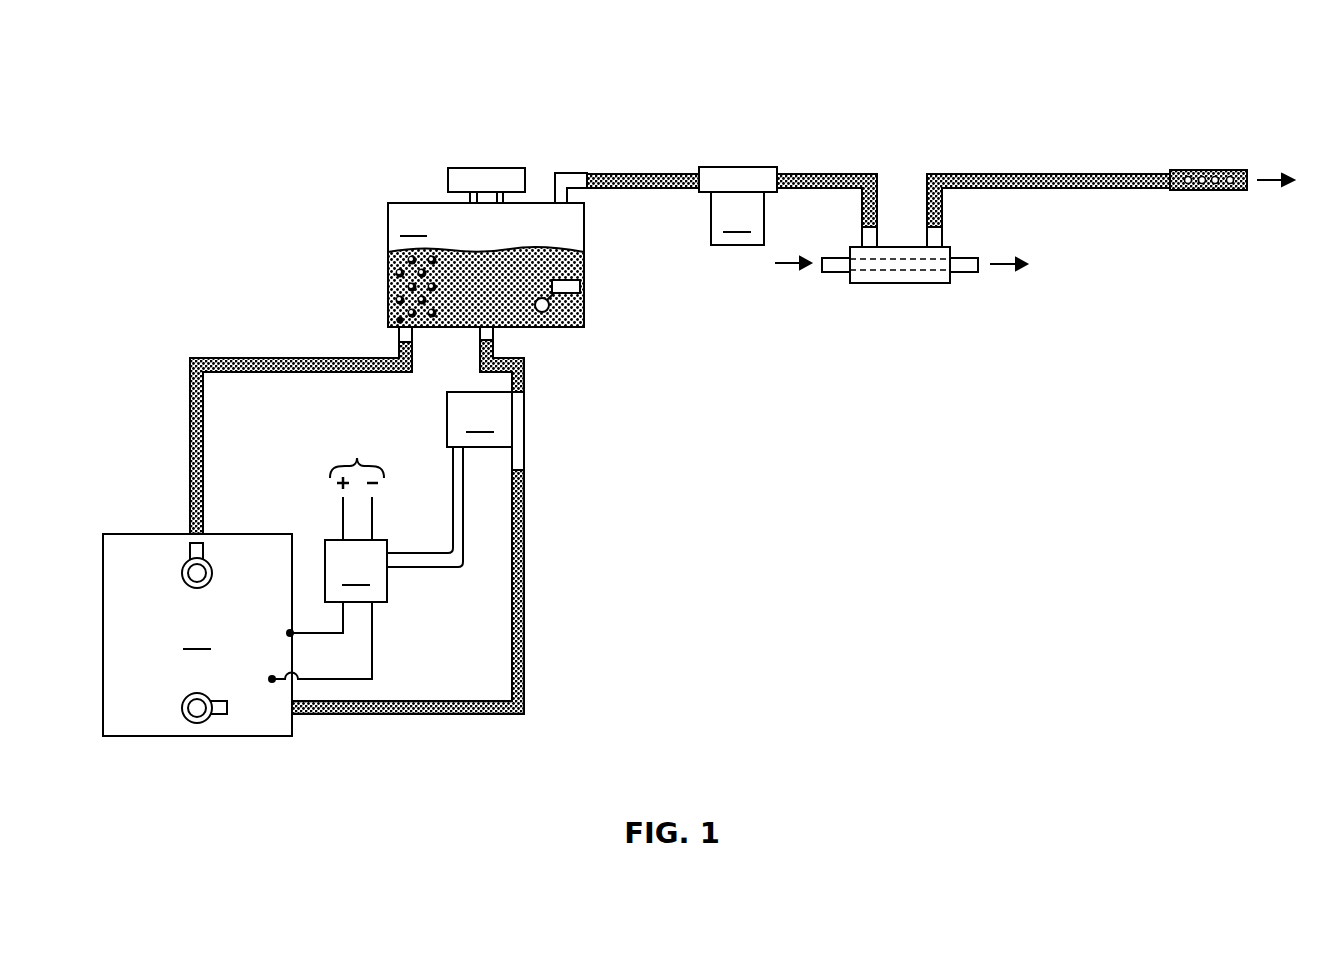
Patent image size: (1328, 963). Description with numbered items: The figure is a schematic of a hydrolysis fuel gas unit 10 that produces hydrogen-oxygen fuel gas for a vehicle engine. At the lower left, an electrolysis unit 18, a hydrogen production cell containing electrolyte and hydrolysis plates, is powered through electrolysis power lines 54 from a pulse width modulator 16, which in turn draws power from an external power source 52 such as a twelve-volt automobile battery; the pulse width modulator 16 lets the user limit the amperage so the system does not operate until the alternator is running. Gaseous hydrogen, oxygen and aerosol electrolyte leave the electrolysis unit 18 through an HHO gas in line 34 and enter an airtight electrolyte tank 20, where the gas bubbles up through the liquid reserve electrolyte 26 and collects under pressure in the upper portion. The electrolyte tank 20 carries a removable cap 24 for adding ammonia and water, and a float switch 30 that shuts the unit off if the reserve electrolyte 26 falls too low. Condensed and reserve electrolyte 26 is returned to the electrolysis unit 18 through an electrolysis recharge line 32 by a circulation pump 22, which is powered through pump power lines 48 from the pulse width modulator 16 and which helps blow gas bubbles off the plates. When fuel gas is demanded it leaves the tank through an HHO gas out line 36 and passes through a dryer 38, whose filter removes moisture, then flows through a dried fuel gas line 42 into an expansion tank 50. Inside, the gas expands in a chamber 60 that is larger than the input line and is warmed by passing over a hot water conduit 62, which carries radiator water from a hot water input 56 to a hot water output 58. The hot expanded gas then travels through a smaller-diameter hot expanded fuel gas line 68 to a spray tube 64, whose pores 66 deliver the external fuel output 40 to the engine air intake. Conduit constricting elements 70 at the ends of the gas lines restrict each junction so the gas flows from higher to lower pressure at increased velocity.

The hydrolysis fuel gas unit 10 is at (236, 72).
The pulse width modulator 16 is at (356, 571).
The electrolysis unit 18 is at (197, 635).
The electrolyte tank 20 is at (486, 265).
The circulation pump 22 is at (479, 419).
The removable cap 24 is at (487, 168).
The reserve electrolyte 26 is at (453, 305).
The float switch 30 is at (582, 286).
The electrolysis recharge line 32 is at (525, 618).
The HHO gas in line 34 is at (245, 358).
The HHO gas out line 36 is at (637, 173).
The dryer 38 is at (738, 206).
The external fuel output 40 is at (1263, 185).
The dried fuel gas line 42 is at (837, 172).
The pump power lines 48 is at (463, 535).
The expansion tank 50 is at (933, 283).
The external power source 52 is at (357, 481).
The electrolysis power lines 54 is at (325, 633).
The hot water input 56 is at (777, 263).
The hot water output 58 is at (995, 264).
The chamber 60 is at (887, 247).
The hot water conduit 62 is at (893, 265).
The spray tube 64 is at (1199, 183).
The pores 66 is at (1188, 177).
The hot expanded fuel gas line 68 is at (1042, 172).
The conduit constricting element 70 is at (561, 173).